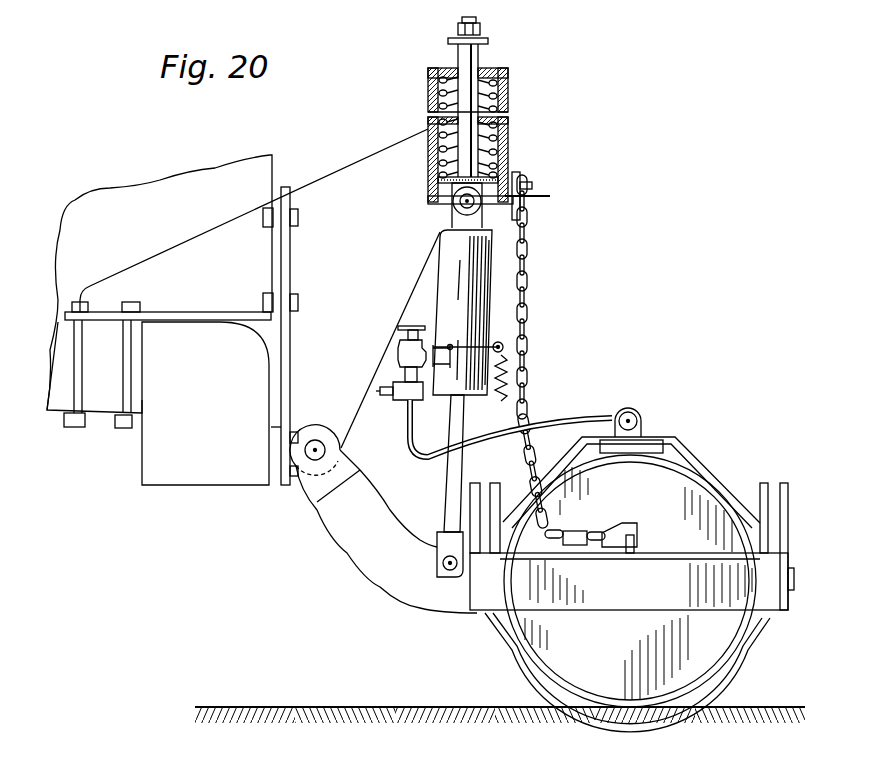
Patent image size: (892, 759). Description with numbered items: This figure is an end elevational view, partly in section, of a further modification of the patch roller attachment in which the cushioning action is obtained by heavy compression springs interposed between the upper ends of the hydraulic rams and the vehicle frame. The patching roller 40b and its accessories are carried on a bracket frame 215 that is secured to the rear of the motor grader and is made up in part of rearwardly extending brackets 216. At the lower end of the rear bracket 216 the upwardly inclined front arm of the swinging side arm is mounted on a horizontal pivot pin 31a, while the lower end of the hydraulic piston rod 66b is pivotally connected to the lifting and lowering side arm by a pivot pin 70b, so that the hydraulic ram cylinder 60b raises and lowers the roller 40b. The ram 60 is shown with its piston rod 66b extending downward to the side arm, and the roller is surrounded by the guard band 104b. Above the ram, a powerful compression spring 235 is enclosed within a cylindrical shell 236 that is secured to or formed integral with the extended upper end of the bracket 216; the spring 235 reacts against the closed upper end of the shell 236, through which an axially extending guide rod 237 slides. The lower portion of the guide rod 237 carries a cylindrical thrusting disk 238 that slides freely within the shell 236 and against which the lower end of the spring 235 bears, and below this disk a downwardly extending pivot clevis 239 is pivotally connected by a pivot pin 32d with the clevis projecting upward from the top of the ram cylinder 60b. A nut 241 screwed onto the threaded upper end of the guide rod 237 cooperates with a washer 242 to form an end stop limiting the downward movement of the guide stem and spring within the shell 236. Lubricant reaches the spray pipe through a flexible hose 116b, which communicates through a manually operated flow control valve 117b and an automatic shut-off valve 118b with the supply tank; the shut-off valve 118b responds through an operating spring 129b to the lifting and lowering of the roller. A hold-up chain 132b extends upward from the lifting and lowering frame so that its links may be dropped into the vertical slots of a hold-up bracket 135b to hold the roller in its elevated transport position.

The bracket frame 215 is at (283, 172).
The rearwardly extending bracket 216 is at (340, 177).
The nut 241 is at (482, 29).
The washer 242 is at (448, 42).
The compression spring 235 is at (492, 95).
The cylindrical shell 236 is at (509, 152).
The guide rod 237 is at (474, 140).
The thrusting disk 238 is at (436, 179).
The pivot clevis 239 is at (430, 199).
The pivot pin 32d is at (460, 203).
The hydraulic ram cylinder 60b is at (444, 230).
The hydraulic cylinder 60 is at (460, 289).
The hold-up bracket 135b is at (536, 197).
The hold-up chain 132b is at (530, 314).
The operating spring 129b is at (510, 380).
The automatic shut-off valve 118b is at (398, 352).
The manually operated flow control valve 117b is at (395, 398).
The flexible hose 116b is at (406, 445).
The horizontal pivot pin 31a is at (315, 448).
The hydraulic piston rod 66b is at (450, 485).
The pivot pin 70b is at (405, 603).
The patching roller 40b is at (550, 680).
The roller guard band 104b is at (497, 643).